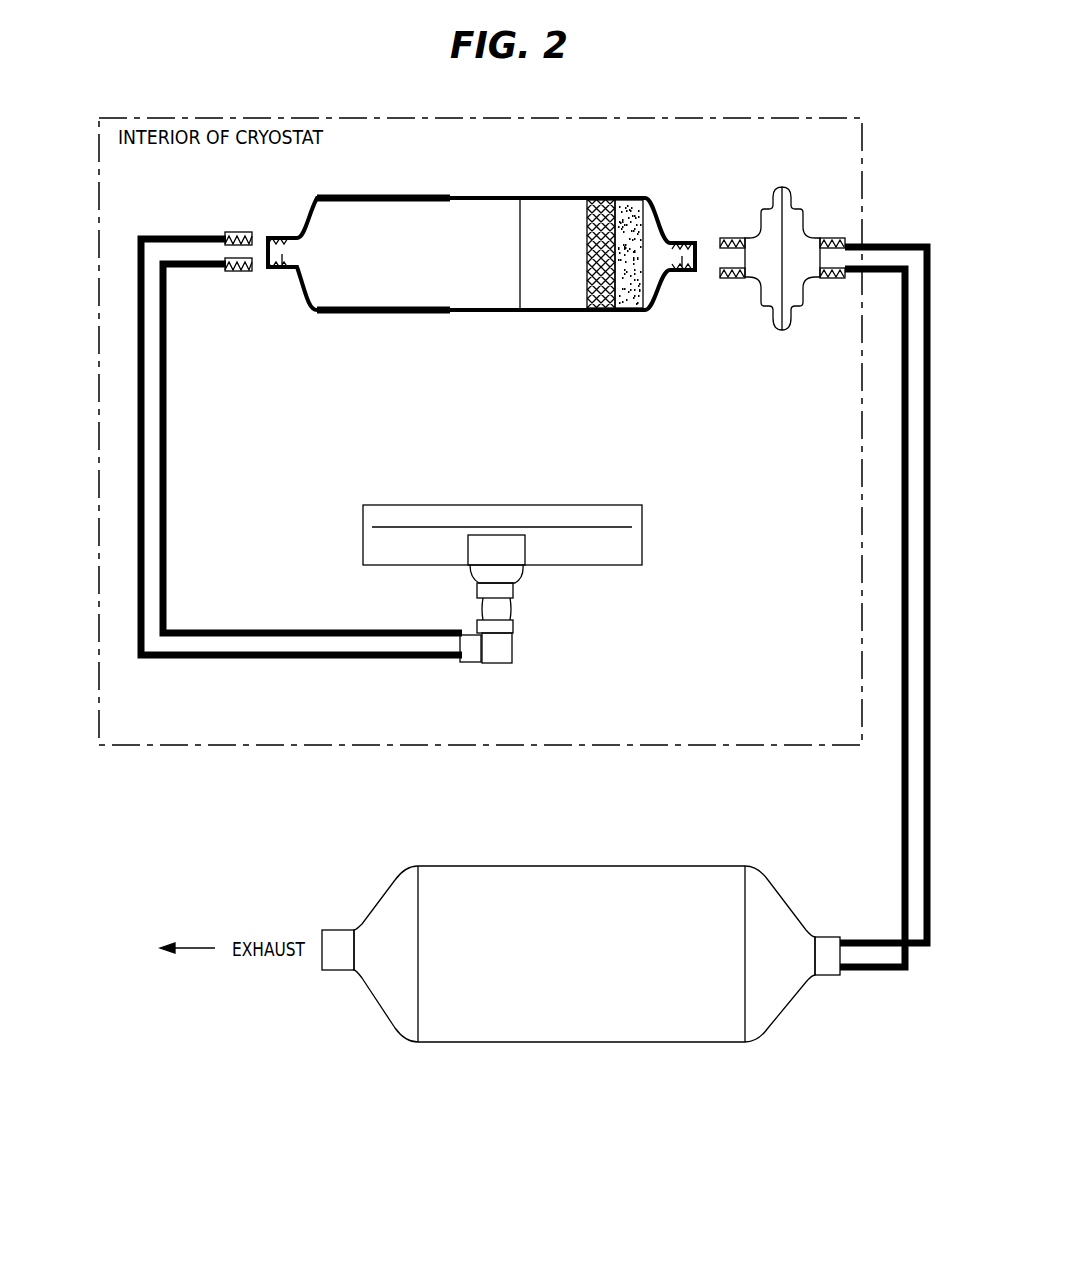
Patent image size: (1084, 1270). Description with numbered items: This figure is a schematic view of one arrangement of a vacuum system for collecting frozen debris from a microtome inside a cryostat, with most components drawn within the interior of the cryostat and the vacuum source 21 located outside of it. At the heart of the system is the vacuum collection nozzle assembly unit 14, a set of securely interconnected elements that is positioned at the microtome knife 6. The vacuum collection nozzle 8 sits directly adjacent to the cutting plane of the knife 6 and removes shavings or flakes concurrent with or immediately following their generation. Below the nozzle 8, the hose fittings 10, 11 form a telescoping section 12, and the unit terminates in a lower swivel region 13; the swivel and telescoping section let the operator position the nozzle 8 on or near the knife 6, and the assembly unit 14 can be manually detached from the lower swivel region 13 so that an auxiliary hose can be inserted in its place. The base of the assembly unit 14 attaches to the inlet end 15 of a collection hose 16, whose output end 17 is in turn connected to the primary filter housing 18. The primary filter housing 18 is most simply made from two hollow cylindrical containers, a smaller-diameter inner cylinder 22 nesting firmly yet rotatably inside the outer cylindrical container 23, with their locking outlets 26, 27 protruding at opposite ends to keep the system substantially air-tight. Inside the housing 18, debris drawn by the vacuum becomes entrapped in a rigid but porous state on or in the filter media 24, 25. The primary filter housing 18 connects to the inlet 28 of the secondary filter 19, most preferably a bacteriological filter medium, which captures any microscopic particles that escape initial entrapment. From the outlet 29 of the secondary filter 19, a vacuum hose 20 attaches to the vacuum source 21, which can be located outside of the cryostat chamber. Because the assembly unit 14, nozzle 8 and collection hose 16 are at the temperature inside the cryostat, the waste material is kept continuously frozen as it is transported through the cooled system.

The microtome knife 6 is at (642, 540).
The vacuum collection nozzle 8 is at (528, 542).
The hose fitting 10 is at (514, 592).
The hose fitting 11 is at (556, 613).
The telescoping section 12 is at (462, 583).
The lower swivel region 13 is at (512, 647).
The vacuum collection nozzle assembly unit 14 is at (408, 535).
The inlet end of collection hose 15 is at (460, 647).
The collection hose 16 is at (165, 442).
The output end of collection hose 17 is at (240, 230).
The primary filter housing 18 is at (481, 259).
The secondary filter 19 is at (776, 325).
The vacuum hose 20 is at (903, 292).
The vacuum source 21 is at (656, 1043).
The inner cylindrical container 22 is at (415, 196).
The outer cylindrical container 23 is at (540, 196).
The filter medium 24 is at (600, 196).
The filter medium 25 is at (640, 196).
The locking outlet 26 is at (283, 272).
The locking outlet 27 is at (696, 280).
The inlet of secondary filter housing 28 is at (733, 238).
The outlet of secondary filter housing 29 is at (830, 238).